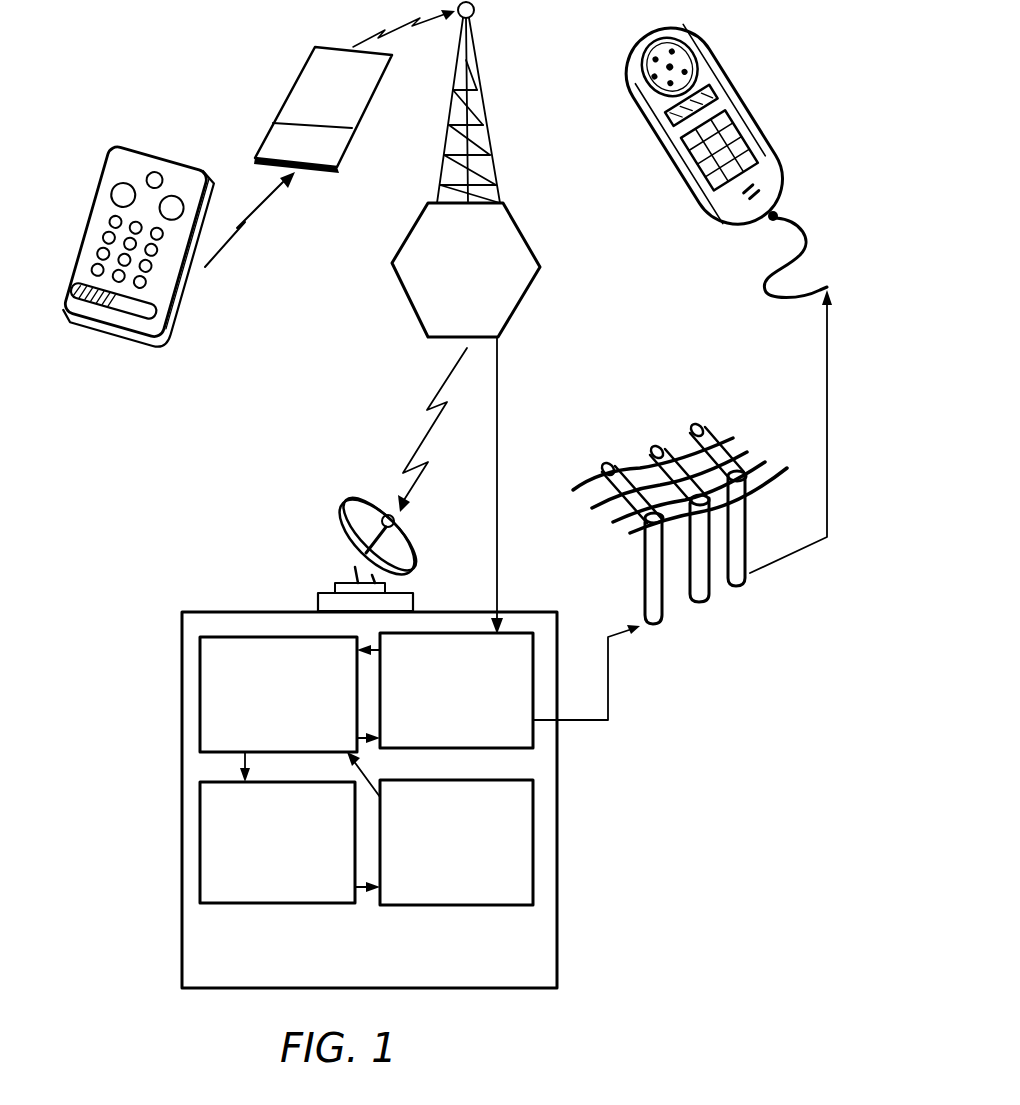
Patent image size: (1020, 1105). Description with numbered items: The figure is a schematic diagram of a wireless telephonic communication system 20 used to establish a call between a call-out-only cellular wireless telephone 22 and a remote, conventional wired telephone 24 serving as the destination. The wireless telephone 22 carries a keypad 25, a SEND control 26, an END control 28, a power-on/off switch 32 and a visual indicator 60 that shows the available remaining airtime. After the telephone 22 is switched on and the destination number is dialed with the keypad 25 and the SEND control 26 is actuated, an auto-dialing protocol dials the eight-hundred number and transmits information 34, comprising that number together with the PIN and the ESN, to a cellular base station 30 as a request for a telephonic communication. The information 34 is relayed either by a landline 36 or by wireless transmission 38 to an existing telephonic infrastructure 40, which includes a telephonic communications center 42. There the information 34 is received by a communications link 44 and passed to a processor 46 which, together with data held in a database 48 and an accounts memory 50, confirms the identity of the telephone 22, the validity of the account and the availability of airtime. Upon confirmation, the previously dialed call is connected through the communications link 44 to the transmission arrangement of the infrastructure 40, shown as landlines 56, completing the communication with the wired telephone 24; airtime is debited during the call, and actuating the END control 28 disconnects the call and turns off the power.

The wireless telephonic communication system 20 is at (245, 450).
The wireless telephone 22 is at (135, 345).
The wired telephone 24 is at (752, 125).
The keypad 25 is at (98, 255).
The SEND control 26 is at (125, 182).
The END control 28 is at (176, 198).
The cellular base station 30 is at (392, 265).
The power-on/off switch 32 is at (158, 170).
The information 34 is at (357, 147).
The landline 36 is at (500, 412).
The wireless transmission 38 is at (420, 440).
The existing telephonic infrastructure 40 is at (543, 582).
The telephonic communications center 42 is at (182, 775).
The communications link 44 is at (445, 632).
The processor 46 is at (255, 635).
The database 48 is at (205, 845).
The accounts memory 50 is at (535, 843).
The landlines 56 is at (678, 466).
The visual indicator 60 is at (78, 300).